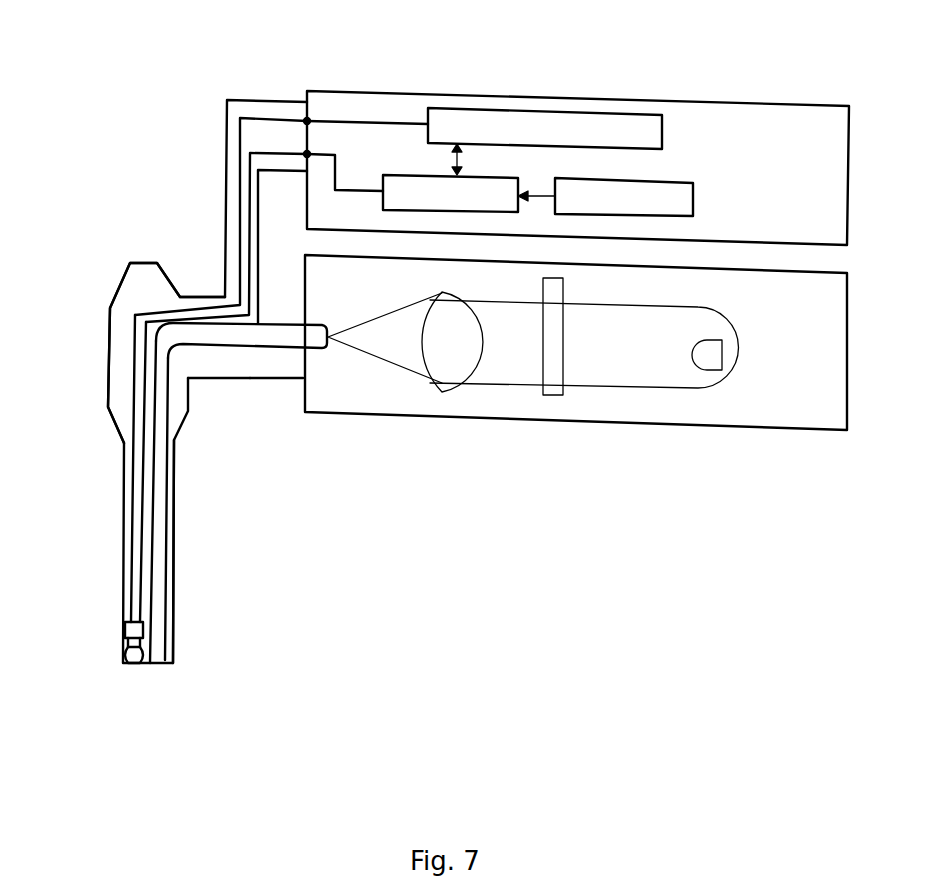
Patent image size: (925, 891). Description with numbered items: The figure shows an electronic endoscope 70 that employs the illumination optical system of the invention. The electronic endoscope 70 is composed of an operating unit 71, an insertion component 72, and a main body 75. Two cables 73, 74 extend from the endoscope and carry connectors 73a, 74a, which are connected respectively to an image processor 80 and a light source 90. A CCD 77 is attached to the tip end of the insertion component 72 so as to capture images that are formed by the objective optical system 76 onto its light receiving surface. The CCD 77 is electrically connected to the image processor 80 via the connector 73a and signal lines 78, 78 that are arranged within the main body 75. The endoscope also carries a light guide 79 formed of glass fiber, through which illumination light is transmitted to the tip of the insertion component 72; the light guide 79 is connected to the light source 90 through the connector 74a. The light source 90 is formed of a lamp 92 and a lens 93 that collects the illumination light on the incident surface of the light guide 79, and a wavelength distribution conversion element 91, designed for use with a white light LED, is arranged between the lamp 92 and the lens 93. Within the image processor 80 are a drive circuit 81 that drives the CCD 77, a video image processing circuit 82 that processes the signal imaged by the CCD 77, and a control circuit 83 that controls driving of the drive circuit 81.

The electronic endoscope 70 is at (135, 243).
The operating unit 71 is at (108, 338).
The insertion component 72 is at (123, 537).
The cable 73 is at (227, 147).
The connector 73a is at (253, 98).
The cable 74 is at (213, 380).
The connector 74a is at (282, 380).
The main body 75 is at (175, 502).
The objective optical system 76 is at (123, 662).
The CCD 77 is at (122, 627).
The signal lines 78 is at (140, 453).
The light guide 79 is at (158, 555).
The image processor 80 is at (665, 96).
The drive circuit 81 is at (395, 173).
The video image processing circuit 82 is at (663, 130).
The control circuit 83 is at (695, 197).
The light source 90 is at (728, 432).
The wavelength distribution conversion element 91 is at (567, 288).
The lamp 92 is at (717, 340).
The lens 93 is at (462, 293).